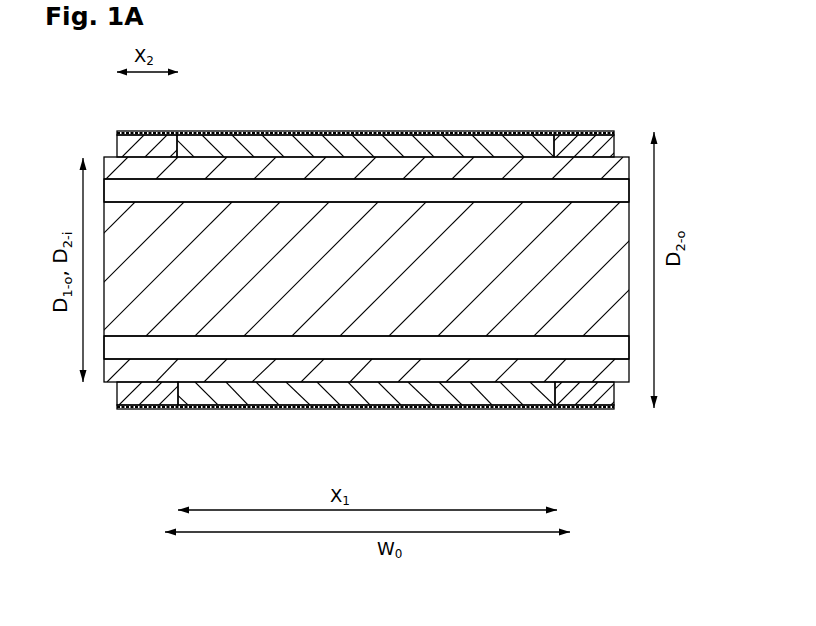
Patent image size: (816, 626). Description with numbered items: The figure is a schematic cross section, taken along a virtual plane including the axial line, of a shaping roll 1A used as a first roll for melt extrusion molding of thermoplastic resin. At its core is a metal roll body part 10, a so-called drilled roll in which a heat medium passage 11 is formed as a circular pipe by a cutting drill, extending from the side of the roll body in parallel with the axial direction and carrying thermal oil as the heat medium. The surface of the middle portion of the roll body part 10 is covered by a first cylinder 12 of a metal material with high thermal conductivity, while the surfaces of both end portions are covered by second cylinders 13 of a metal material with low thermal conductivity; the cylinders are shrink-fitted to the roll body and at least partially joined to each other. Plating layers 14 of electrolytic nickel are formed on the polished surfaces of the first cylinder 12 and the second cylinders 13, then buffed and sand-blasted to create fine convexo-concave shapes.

The shaping roll 1A is at (456, 100).
The roll body part 10 is at (500, 225).
The heat medium passage 11 is at (170, 186).
The first cylinder 12 is at (325, 146).
The second cylinders 13 is at (595, 395).
The plating layers 14 is at (222, 131).